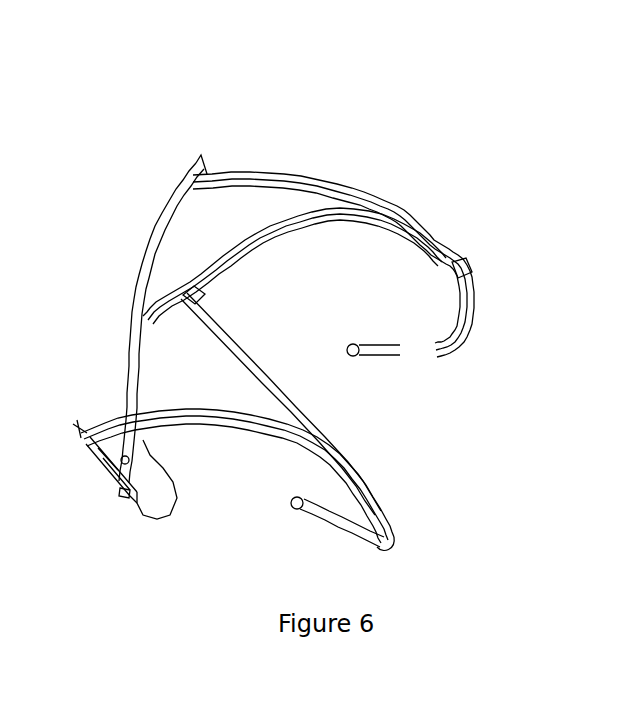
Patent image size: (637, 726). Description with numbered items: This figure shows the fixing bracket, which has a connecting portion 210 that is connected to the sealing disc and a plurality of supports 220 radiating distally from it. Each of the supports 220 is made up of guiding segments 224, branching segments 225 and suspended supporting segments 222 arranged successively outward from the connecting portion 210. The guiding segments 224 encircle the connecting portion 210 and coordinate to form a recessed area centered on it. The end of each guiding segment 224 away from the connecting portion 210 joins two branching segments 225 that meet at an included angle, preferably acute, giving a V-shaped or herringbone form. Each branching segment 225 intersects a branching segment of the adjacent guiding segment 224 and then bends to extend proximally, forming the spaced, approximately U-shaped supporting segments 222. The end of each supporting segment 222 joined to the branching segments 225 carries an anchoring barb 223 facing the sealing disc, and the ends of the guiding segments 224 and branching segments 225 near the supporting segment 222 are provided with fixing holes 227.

The connecting portion 210 is at (153, 496).
The supports 220 is at (343, 167).
The suspended supporting segment 222 is at (457, 349).
The anchoring barb 223 is at (470, 264).
The guiding segment 224 is at (135, 292).
The branching segment 225 is at (257, 228).
The fixing holes 227 is at (345, 462).